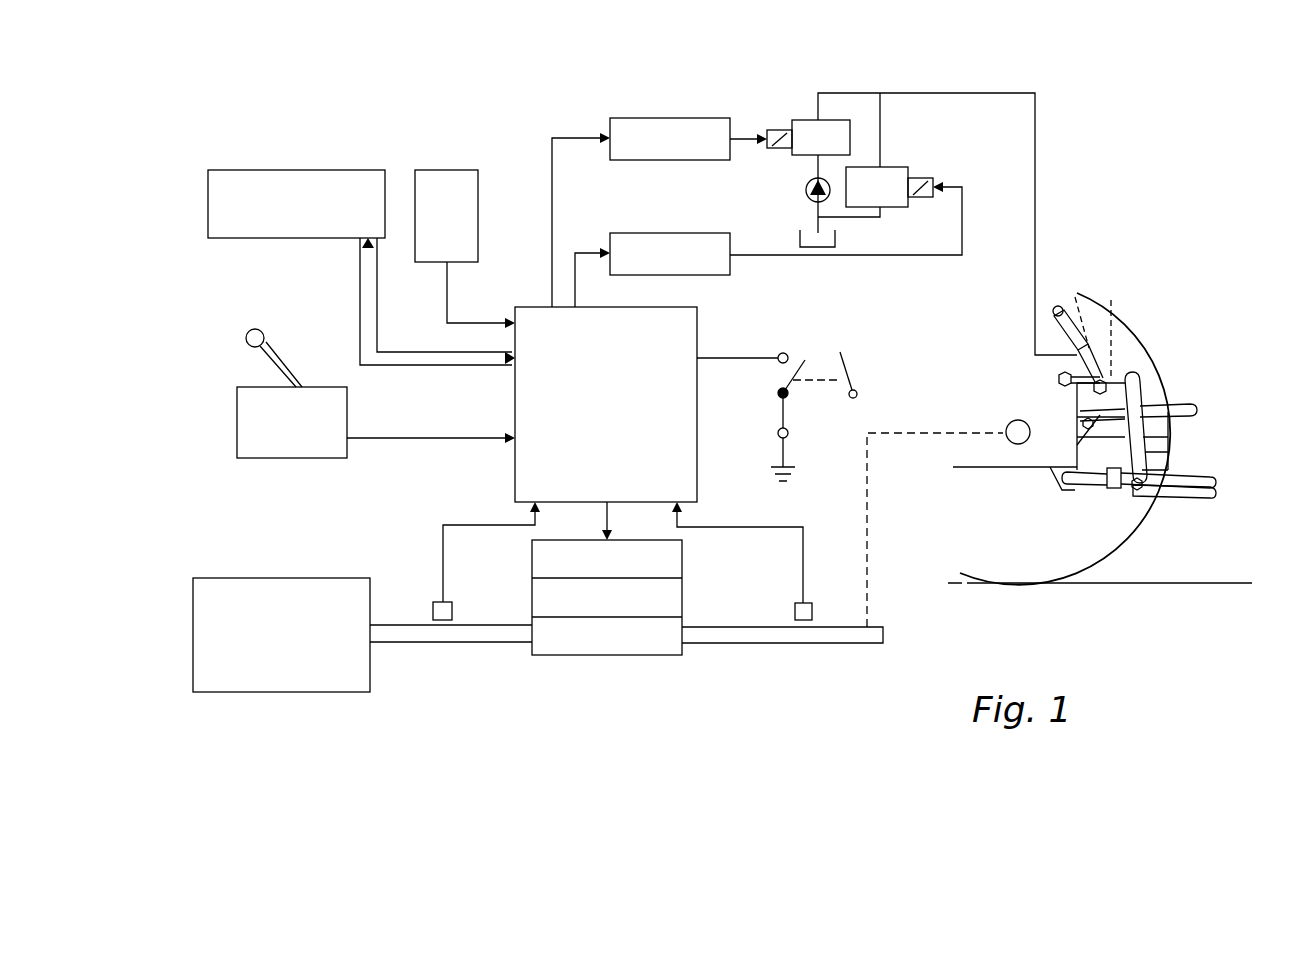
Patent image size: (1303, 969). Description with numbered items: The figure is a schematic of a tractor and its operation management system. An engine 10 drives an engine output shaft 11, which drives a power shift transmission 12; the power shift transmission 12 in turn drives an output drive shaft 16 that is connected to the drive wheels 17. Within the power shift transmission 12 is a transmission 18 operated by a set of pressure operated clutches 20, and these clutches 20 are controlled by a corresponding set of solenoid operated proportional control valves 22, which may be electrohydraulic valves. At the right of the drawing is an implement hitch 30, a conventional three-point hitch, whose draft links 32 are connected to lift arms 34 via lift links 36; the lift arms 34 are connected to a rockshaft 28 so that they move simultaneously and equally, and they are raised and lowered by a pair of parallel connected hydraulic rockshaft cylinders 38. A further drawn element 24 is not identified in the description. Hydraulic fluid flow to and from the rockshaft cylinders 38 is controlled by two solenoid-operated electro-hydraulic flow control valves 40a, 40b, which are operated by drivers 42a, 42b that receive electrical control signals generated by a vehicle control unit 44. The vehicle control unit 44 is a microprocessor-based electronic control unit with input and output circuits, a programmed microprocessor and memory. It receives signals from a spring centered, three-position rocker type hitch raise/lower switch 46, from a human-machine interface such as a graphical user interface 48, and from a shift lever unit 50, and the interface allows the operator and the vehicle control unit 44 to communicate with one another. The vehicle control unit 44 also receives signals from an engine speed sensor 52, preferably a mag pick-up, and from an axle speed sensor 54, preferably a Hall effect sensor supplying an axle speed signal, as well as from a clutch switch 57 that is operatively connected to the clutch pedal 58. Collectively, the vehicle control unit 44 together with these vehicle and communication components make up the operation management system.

The engine 10 is at (300, 692).
The engine output shaft 11 is at (475, 622).
The power shift transmission 12 is at (616, 581).
The output drive shaft 16 is at (883, 627).
The drive wheels 17 is at (1112, 548).
The transmission 18 is at (607, 597).
The clutches 20 is at (530, 585).
The solenoid operated proportional control valves 22 is at (588, 538).
The pivot point 24 is at (1001, 450).
The rockshaft 28 is at (1057, 379).
The implement hitch 30 is at (1152, 382).
The draft links 32 is at (1202, 497).
The lift arms 34 is at (1112, 378).
The lift links 36 is at (1172, 442).
The rockshaft cylinders 38 is at (1094, 326).
The electro-hydraulic flow control valve 40a is at (803, 120).
The electro-hydraulic flow control valve 40b is at (903, 167).
The driver 42a is at (659, 118).
The driver 42b is at (662, 233).
The vehicle control unit 44 is at (698, 332).
The hitch raise/lower switch 46 is at (463, 170).
The graphical user interface 48 is at (345, 170).
The shift lever unit 50 is at (292, 393).
The engine speed sensor 52 is at (433, 610).
The axle speed sensor 54 is at (795, 610).
The clutch switch 57 is at (796, 380).
The clutch pedal 58 is at (848, 361).